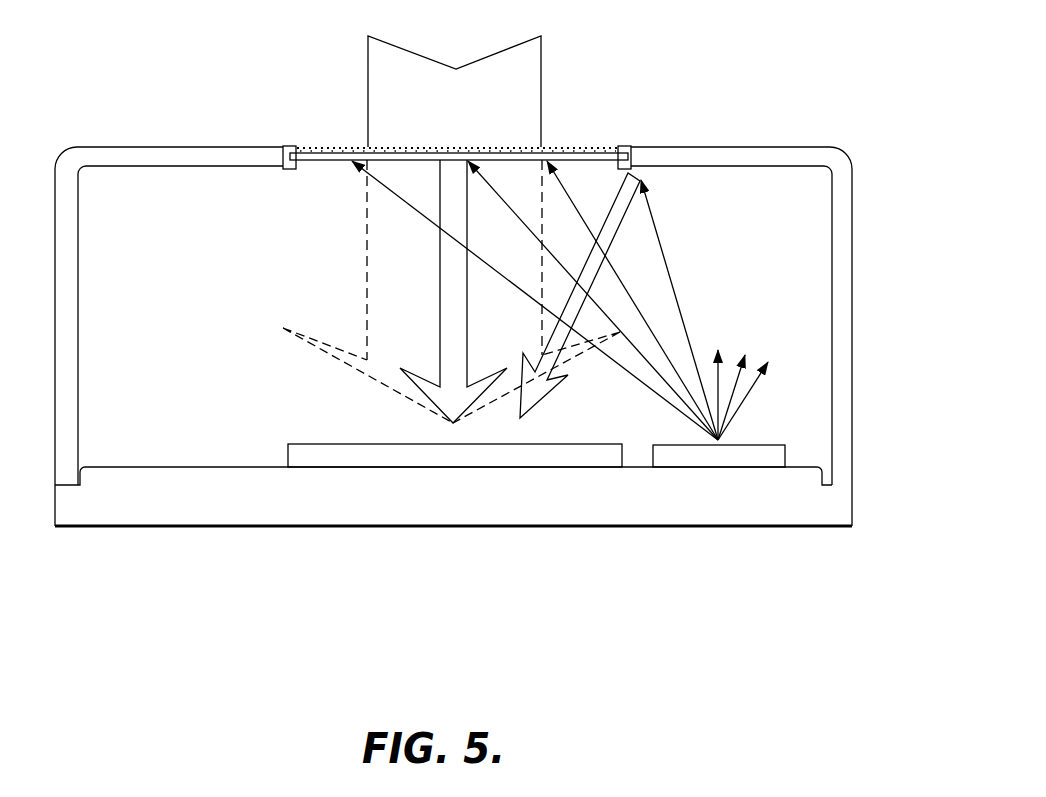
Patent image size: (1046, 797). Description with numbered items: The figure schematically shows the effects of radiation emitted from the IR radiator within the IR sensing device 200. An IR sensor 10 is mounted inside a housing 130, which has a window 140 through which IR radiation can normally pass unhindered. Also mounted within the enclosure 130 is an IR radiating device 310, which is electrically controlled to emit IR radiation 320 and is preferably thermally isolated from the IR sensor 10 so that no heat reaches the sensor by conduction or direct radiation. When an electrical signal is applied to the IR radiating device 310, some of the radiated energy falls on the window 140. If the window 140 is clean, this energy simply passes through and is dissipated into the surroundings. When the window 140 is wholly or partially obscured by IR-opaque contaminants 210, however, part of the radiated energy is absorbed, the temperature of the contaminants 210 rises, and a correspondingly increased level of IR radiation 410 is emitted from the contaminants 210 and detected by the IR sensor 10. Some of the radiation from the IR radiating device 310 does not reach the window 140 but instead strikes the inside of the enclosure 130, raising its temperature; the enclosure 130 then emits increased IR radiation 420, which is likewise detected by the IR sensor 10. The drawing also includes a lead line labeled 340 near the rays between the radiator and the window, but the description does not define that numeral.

The IR sensing device 200 is at (206, 94).
The housing 130 is at (852, 229).
The window 140 is at (615, 147).
The contaminants 210 is at (557, 147).
The IR radiation 410 is at (453, 348).
The IR radiation 420 is at (518, 425).
The IR sensor 10 is at (385, 455).
The IR radiating device 310 is at (683, 458).
The IR radiation 320 is at (687, 392).
The light rays to window 340 is at (683, 313).